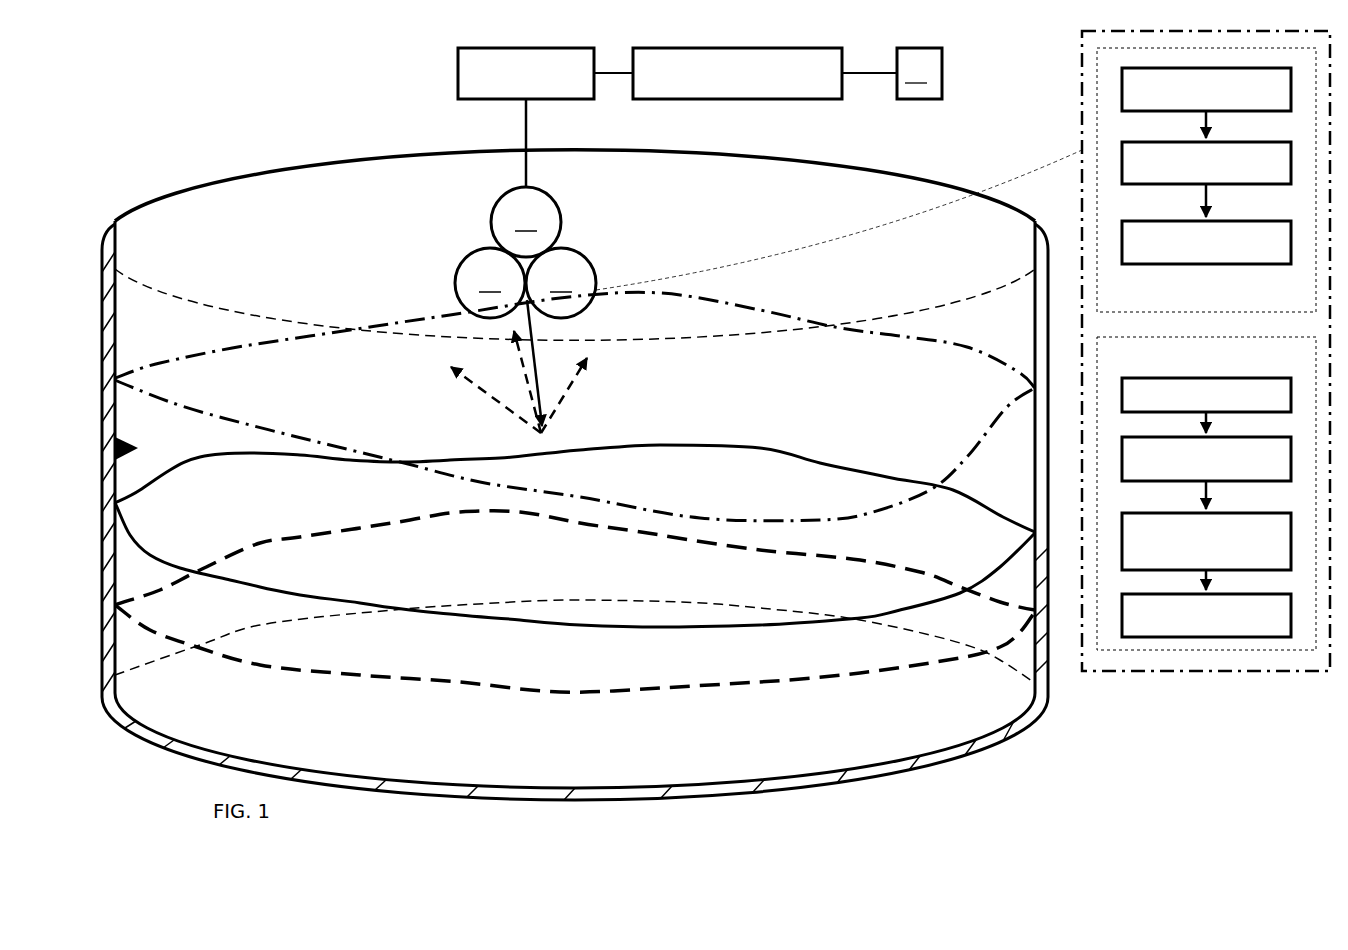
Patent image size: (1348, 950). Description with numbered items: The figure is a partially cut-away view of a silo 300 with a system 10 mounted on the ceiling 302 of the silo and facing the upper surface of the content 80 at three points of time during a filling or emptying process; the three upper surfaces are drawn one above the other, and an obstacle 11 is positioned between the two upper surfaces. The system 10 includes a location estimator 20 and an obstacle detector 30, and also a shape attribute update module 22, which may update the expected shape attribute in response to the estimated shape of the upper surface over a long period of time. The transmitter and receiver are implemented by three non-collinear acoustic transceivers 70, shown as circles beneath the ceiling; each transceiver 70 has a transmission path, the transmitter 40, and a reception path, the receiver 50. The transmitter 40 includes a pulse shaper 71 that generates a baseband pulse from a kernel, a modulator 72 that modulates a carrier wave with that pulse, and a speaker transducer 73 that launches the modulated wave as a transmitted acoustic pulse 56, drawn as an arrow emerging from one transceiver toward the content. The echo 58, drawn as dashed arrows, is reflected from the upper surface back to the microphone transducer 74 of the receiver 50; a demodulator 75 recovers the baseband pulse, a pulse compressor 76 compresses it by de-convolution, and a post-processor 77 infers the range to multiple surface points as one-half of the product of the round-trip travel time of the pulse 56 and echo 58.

The system 10 is at (420, 112).
The obstacle 11 is at (132, 440).
The location estimator 20 is at (765, 73).
The shape attribute update module 22 is at (919, 73).
The obstacle detector 30 is at (545, 117).
The transmitter 40 is at (1206, 180).
The receiver 50 is at (1143, 365).
The transmitted acoustic pulse 56 is at (543, 363).
The echo 58 is at (518, 380).
The acoustic transceiver 70 is at (1183, 668).
The pulse shaper 71 is at (1206, 89).
The modulator 72 is at (1206, 163).
The transducer (speaker) 73 is at (1206, 242).
The transducer (microphone) 74 is at (1206, 395).
The demodulator 75 is at (1206, 459).
The pulse compressor 76 is at (1206, 541).
The post-processor 77 is at (1206, 615).
The content 80 is at (237, 721).
The silo 300 is at (880, 772).
The ceiling 302 is at (805, 160).